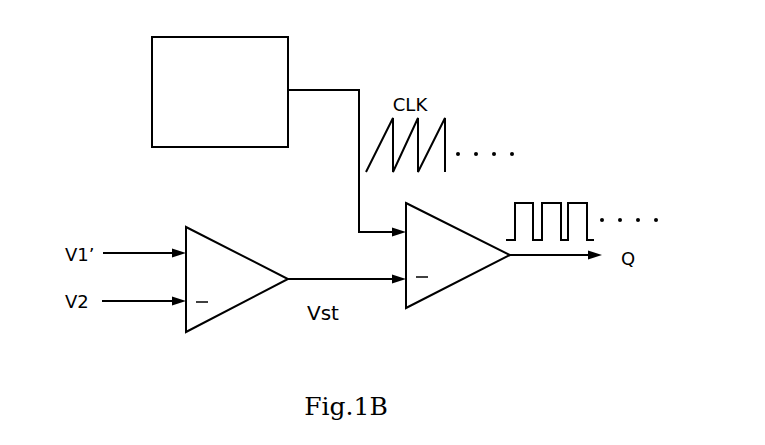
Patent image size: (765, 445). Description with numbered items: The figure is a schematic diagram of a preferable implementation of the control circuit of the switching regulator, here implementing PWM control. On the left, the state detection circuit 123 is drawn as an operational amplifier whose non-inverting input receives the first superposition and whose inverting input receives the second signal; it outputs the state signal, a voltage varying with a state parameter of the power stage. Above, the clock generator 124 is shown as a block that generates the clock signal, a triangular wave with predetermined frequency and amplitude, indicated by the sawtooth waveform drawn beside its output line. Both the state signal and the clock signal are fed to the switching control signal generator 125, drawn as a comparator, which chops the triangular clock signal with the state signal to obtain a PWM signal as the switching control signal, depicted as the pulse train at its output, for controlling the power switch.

The state detection circuit 123 is at (222, 243).
The clock generator 124 is at (220, 92).
The switching control signal generator 125 is at (446, 288).